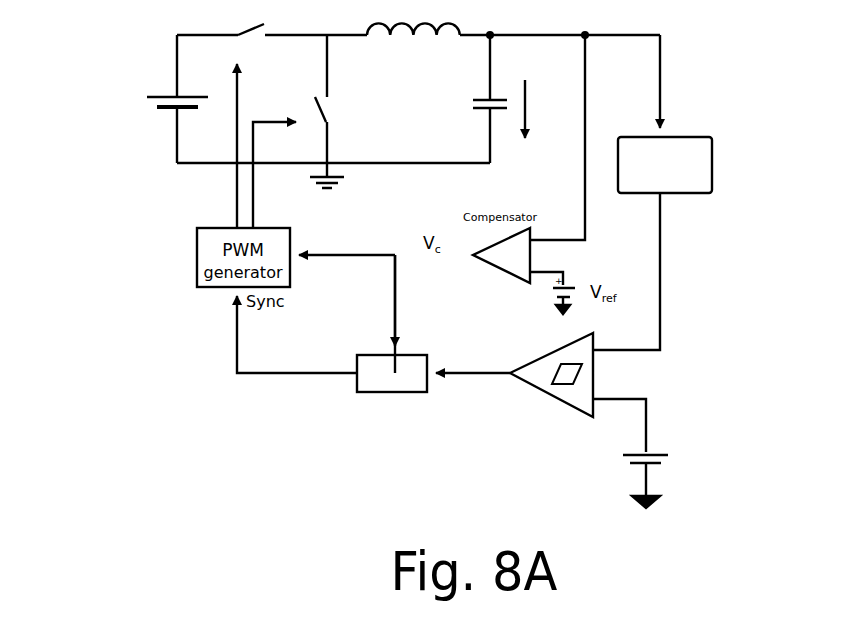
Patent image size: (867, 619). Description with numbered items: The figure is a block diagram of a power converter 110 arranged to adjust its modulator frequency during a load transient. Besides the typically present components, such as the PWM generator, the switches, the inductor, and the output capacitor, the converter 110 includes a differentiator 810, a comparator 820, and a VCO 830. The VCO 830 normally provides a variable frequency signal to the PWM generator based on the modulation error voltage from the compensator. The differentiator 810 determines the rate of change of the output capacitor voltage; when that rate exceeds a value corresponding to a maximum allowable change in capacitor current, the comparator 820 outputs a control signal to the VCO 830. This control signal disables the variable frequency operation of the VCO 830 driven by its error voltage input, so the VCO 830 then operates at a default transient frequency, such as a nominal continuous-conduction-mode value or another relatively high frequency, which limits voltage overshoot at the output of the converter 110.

The power converter 110 is at (128, 175).
The differentiator 810 is at (690, 162).
The comparator 820 is at (580, 410).
The VCO 830 is at (380, 393).